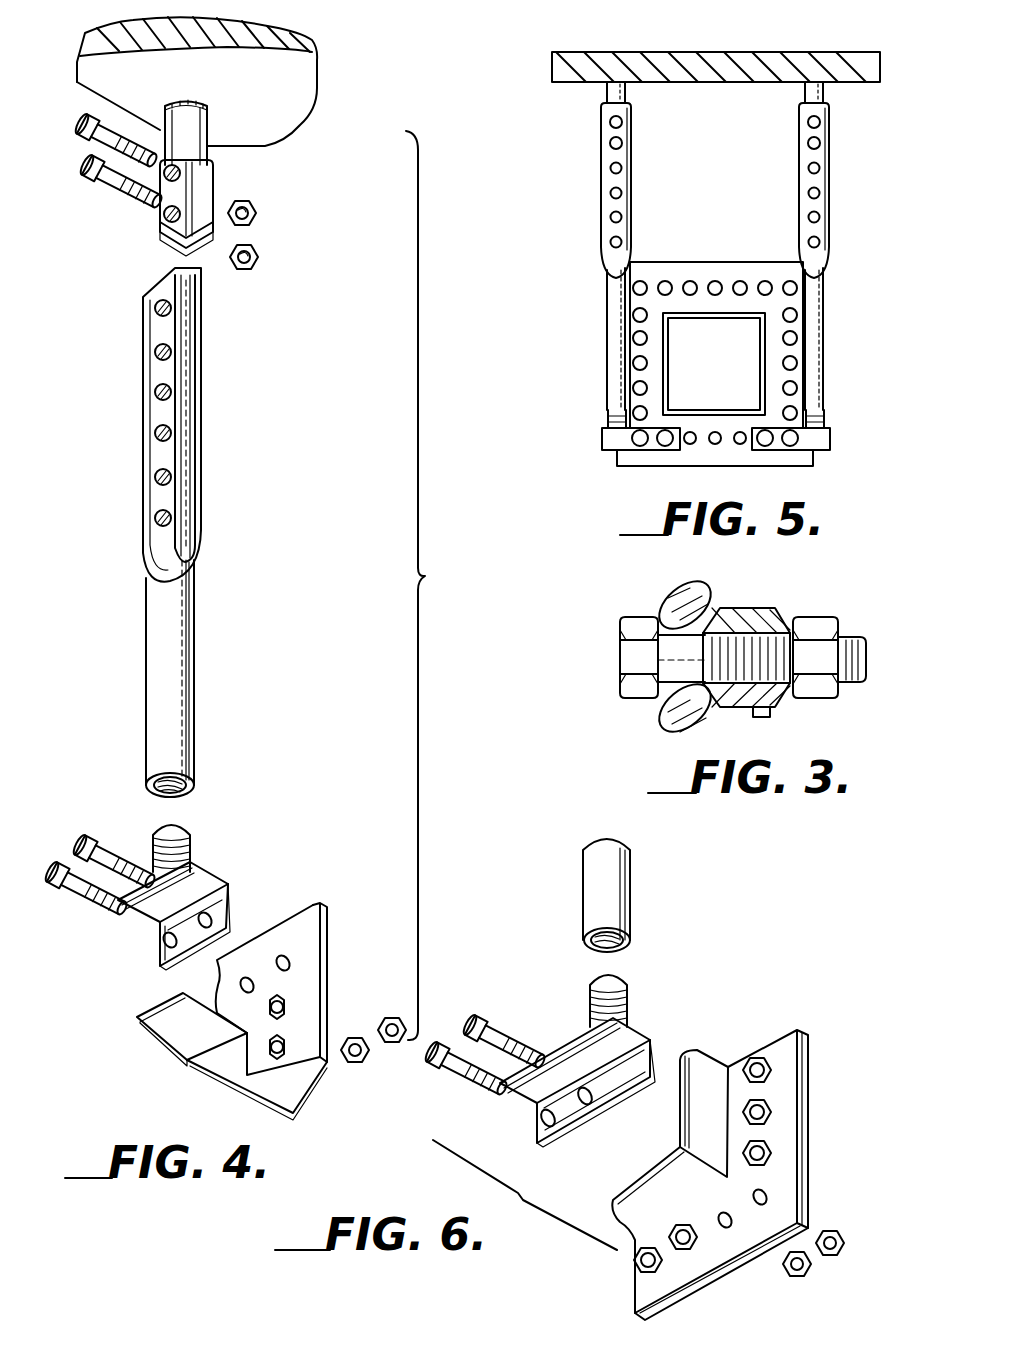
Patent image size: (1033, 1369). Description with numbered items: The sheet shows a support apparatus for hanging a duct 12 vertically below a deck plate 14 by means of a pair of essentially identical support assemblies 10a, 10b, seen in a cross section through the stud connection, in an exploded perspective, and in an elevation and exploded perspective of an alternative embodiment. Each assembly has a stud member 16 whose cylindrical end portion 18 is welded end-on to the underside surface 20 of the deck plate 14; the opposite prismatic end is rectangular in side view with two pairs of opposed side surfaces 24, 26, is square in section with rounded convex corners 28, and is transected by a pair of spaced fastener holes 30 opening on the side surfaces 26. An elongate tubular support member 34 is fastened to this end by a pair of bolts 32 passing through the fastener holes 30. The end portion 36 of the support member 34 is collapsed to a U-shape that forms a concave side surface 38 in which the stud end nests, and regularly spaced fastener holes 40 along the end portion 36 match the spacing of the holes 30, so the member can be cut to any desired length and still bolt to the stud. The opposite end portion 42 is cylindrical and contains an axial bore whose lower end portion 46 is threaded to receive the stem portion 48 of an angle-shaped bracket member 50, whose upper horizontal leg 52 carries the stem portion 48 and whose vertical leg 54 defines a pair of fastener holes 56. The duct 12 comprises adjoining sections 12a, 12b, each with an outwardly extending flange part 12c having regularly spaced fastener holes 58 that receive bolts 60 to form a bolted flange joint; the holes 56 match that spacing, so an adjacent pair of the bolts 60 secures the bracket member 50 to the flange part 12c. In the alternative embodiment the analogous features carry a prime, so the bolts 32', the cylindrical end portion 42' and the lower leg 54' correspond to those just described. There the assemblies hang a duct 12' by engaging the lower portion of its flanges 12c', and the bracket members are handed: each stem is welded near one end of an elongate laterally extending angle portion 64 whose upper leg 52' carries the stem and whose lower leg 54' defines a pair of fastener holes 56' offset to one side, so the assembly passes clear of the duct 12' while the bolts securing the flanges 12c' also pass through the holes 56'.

In FIG. 4, the deck plate 14 is at (312, 42).
In FIG. 4, the stud member 16 is at (232, 163).
In FIG. 4, the cylindrical end portion 18 is at (207, 138).
In FIG. 4, the underside surface 20 is at (300, 92).
In FIG. 4, the side surfaces 24 is at (214, 215).
In FIG. 3, the side surfaces 24 is at (770, 607).
In FIG. 4, the side surfaces 26 is at (163, 226).
In FIG. 4, the rounded convex corners 28 is at (193, 190).
In FIG. 3, the rounded convex corners 28 is at (805, 617).
In FIG. 4, the fastener holes 30 is at (165, 168).
In FIG. 4, the bolts 32 is at (102, 147).
In FIG. 3, the bolts 32 is at (608, 657).
In FIG. 4, the tubular support member 34 is at (213, 569).
In FIG. 4, the end portion 36 is at (196, 440).
In FIG. 3, the end portion 36 is at (672, 588).
In FIG. 3, the concave side surface 38 is at (712, 630).
In FIG. 4, the fastener holes 40 is at (155, 348).
In FIG. 3, the fastener holes 40 is at (660, 678).
In FIG. 4, the opposite end portion 42 is at (141, 678).
In FIG. 4, the lower end portion 46 is at (180, 790).
In FIG. 4, the stem portion 48 is at (190, 840).
In FIG. 4, the bracket member 50 is at (238, 870).
In FIG. 5, the bracket member 50 is at (617, 458).
In FIG. 4, the upper horizontal leg 52 is at (150, 916).
In FIG. 4, the vertical leg 54 is at (156, 942).
In FIG. 4, the fastener holes 56 is at (153, 934).
In FIG. 4, the fastener holes 58 is at (255, 975).
In FIG. 4, the bolts 60 is at (60, 865).
In FIG. 6, the bolts 60 is at (445, 1045).
In FIG. 5, the angle portion 64 is at (602, 438).
In FIG. 6, the angle portion 64 is at (563, 1040).
In FIG. 5, the support assembly 10a is at (598, 312).
In FIG. 5, the support assembly 10b is at (828, 336).
In FIG. 6, the duct 12 is at (526, 1195).
In FIG. 4, the duct section 12a is at (177, 1047).
In FIG. 4, the duct section 12b is at (290, 1105).
In FIG. 4, the flange part 12c is at (302, 968).
In FIG. 5, the duct 12' is at (714, 364).
In FIG. 5, the flanges 12c' is at (716, 329).
In FIG. 6, the flanges 12c' is at (757, 1154).
In FIG. 5, the bolt holes 32' is at (754, 180).
In FIG. 6, the rod 42' is at (639, 895).
In FIG. 6, the upper leg 52' is at (605, 1061).
In FIG. 6, the bracket flange 54' is at (611, 1102).
In FIG. 6, the fastener holes 56' is at (529, 1115).